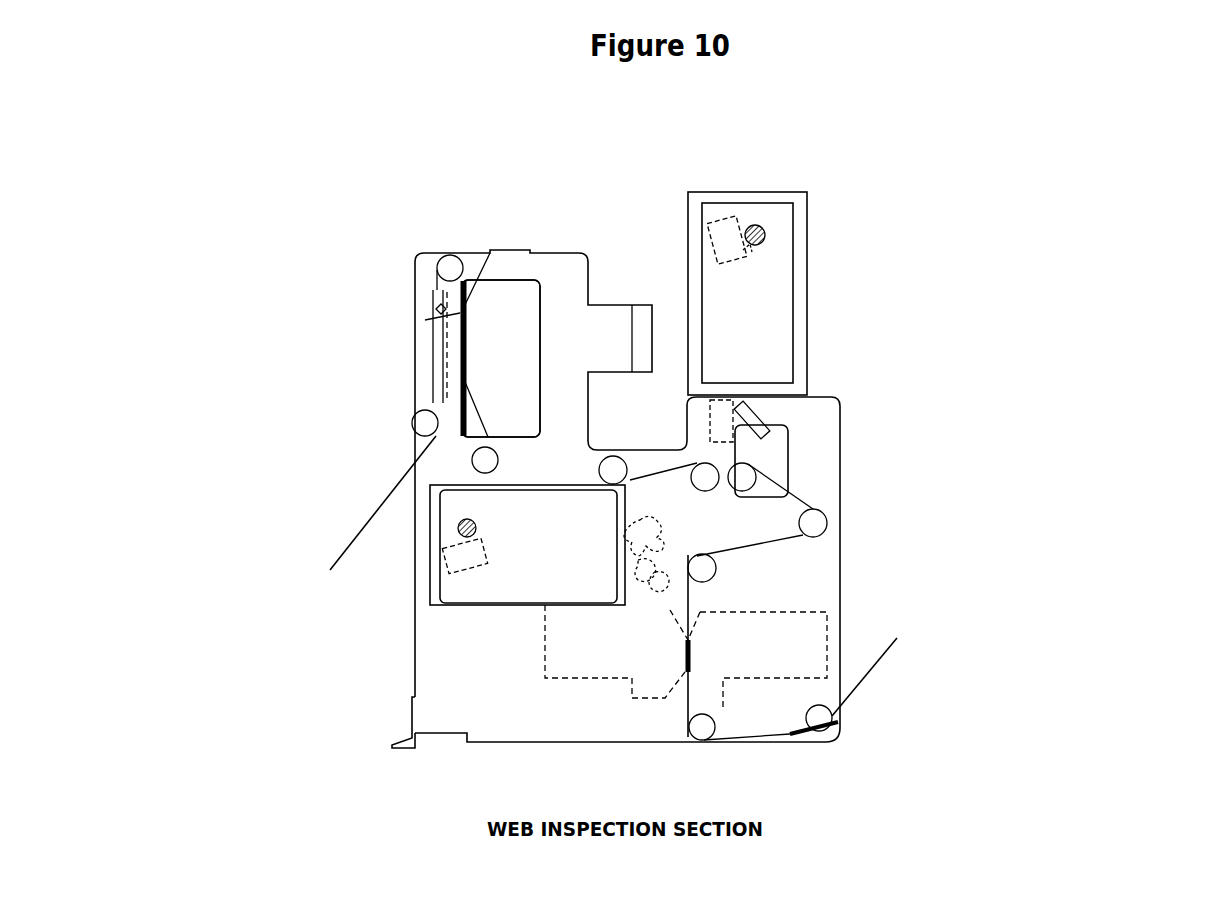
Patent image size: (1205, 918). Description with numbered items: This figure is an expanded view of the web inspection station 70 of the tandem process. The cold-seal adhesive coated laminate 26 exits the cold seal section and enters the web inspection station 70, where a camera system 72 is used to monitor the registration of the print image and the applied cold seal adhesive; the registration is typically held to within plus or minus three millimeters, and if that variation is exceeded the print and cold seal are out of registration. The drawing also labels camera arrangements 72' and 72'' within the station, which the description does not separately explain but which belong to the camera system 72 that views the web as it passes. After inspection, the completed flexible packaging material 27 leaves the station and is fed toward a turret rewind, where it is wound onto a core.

The web inspection station 70 is at (1016, 274).
The camera system 72 is at (905, 606).
The camera (qty 2) 72' is at (602, 464).
The sliding camera reading back of web (metallic side) 72'' is at (294, 337).
The completed flexible packaging material 27 is at (355, 528).
The cold-seal adhesive coated laminate 26 is at (863, 683).